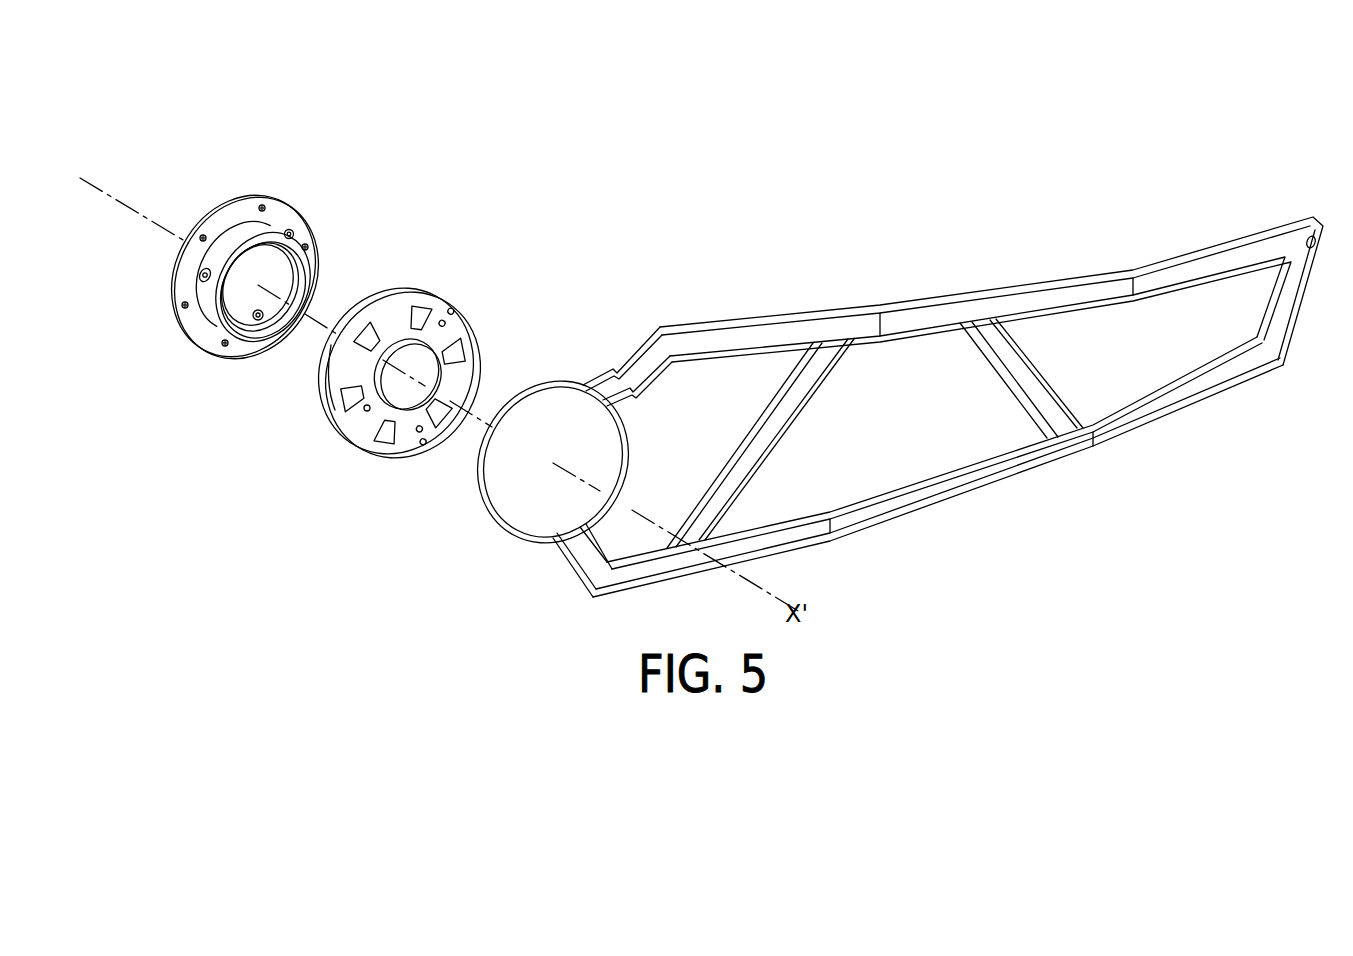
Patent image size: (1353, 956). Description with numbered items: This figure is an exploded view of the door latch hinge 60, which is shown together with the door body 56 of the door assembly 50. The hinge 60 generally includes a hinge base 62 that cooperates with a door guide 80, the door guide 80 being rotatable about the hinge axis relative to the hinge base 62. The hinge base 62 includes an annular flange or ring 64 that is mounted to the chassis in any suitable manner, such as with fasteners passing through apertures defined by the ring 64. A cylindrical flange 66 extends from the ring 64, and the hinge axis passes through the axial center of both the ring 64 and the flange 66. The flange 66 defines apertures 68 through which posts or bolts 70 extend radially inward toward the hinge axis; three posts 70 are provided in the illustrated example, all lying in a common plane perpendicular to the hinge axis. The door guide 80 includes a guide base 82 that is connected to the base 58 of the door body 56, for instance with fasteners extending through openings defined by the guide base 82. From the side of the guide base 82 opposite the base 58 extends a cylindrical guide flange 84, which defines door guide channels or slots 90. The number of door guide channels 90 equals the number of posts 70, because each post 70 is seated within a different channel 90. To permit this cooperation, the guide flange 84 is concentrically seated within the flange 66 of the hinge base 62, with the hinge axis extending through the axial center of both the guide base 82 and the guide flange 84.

The arm assembly 50 is at (813, 131).
The door body 56 is at (990, 295).
The base 58 is at (514, 512).
The hinge 60 is at (338, 152).
The hinge base 62 is at (178, 337).
The annular flange or ring 64 is at (254, 193).
The cylindrical flange 66 is at (262, 228).
The apertures 68 is at (212, 280).
The posts or bolts 70 is at (291, 235).
The door guide 80 is at (333, 445).
The guide base 82 is at (467, 318).
The cylindrical guide flange 84 is at (360, 313).
The door guide channels or slots 90 is at (338, 374).